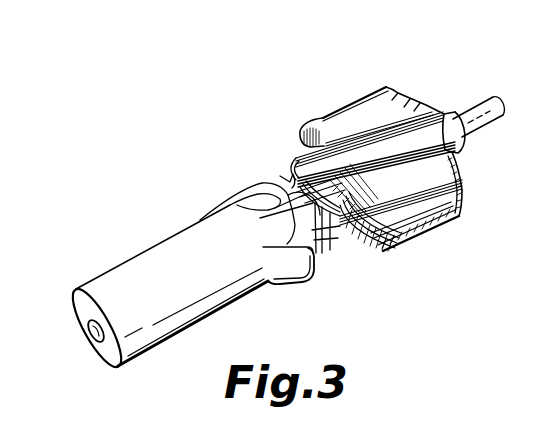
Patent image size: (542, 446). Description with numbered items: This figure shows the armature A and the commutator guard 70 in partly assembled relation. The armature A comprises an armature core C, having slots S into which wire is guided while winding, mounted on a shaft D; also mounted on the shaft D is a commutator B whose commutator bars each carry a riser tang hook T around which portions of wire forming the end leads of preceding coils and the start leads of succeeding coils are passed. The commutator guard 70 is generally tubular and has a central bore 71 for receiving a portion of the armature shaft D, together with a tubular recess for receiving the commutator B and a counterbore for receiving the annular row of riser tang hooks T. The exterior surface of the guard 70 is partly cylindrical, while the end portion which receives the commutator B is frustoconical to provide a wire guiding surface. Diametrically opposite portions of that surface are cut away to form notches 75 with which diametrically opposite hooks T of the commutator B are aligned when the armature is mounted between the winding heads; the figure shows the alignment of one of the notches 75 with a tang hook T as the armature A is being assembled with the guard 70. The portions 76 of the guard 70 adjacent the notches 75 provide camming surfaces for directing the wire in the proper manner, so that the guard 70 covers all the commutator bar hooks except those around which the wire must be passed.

The commutator guard 70 is at (138, 258).
The central bore 71 is at (92, 337).
The notches 75 is at (263, 249).
The portions of the guard adjacent the notches 76 is at (249, 233).
The commutator B is at (292, 214).
The riser tang hook T is at (286, 180).
The armature A is at (447, 259).
The armature core C is at (362, 103).
The slots S is at (394, 95).
The shaft D is at (481, 100).